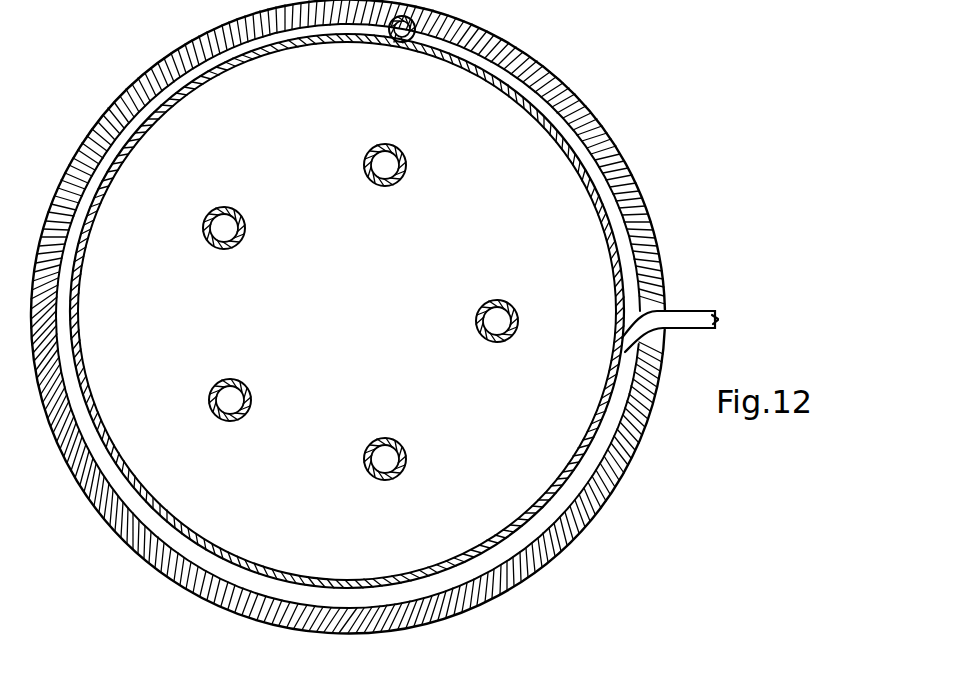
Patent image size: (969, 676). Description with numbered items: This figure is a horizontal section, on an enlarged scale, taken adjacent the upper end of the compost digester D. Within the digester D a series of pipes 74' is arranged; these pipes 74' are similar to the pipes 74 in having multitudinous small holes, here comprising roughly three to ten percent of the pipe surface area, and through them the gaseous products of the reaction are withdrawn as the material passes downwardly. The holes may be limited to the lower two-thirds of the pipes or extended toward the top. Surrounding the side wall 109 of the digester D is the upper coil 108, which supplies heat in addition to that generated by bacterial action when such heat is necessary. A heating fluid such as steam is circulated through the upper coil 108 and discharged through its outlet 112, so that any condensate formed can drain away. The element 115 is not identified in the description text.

The digester D is at (348, 316).
The outer wall / liner 115 is at (599, 122).
The side wall 109 is at (575, 152).
The upper coil 108 is at (603, 190).
The outlet 112 is at (683, 311).
The pipes 74 is at (517, 321).
The pipes 74' is at (327, 312).